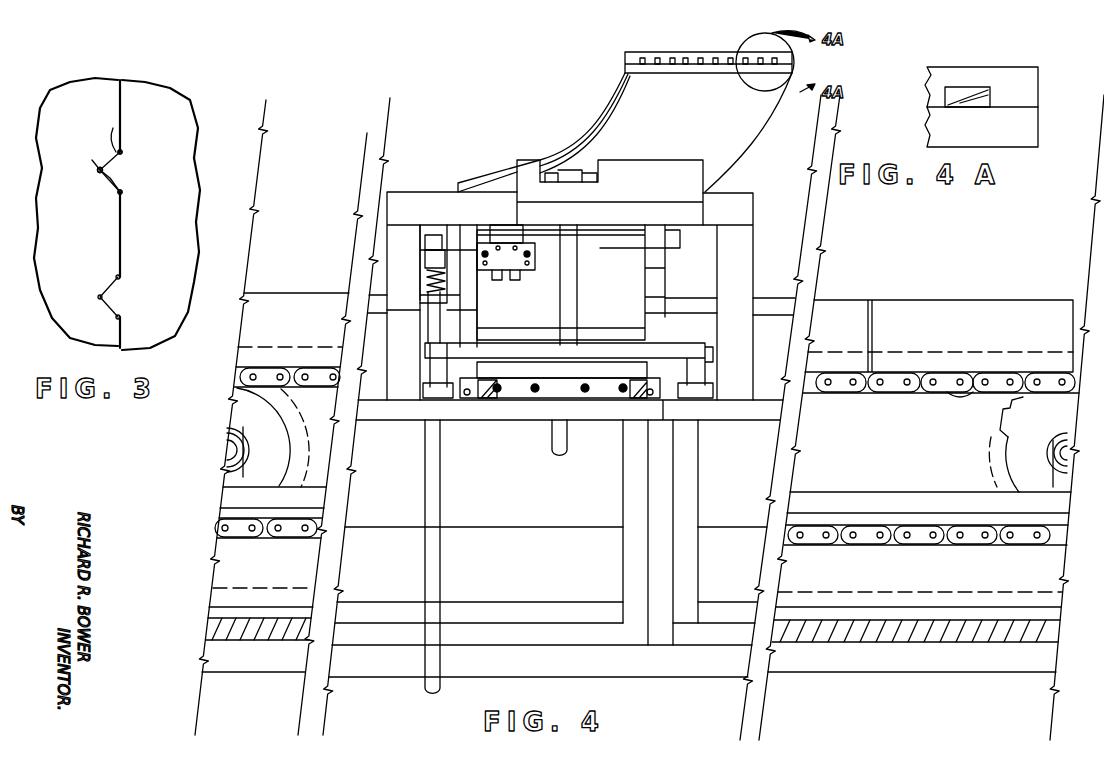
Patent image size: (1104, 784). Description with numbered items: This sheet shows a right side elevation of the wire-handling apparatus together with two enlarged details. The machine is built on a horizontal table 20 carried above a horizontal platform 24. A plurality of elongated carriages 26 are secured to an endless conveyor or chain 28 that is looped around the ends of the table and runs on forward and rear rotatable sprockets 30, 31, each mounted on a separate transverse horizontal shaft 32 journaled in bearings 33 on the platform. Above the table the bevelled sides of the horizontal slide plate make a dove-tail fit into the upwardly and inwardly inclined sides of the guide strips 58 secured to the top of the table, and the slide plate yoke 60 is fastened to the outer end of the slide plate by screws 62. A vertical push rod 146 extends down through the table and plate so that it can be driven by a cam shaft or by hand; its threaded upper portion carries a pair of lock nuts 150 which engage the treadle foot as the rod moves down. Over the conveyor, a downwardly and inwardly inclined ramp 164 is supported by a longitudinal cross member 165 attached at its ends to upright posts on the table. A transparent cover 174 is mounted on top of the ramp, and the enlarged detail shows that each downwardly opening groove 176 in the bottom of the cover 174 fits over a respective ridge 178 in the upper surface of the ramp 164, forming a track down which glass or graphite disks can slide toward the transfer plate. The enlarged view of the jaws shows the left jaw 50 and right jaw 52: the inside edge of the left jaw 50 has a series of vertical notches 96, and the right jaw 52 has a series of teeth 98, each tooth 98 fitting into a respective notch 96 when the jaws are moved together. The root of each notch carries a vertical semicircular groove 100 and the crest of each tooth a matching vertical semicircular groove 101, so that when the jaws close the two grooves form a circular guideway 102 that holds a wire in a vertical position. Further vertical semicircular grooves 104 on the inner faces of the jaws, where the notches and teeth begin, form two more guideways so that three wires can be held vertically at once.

In FIG. 4, the horizontal table 20 is at (492, 412).
In FIG. 4, the horizontal platform 24 is at (475, 655).
In FIG. 4, the elongated carriages 26 is at (898, 306).
In FIG. 4, the endless conveyor or chain 28 is at (868, 395).
In FIG. 4, the forward sprocket 30 is at (1005, 420).
In FIG. 4, the rear sprocket 31 is at (276, 437).
In FIG. 4, the transverse horizontal shaft 32 is at (226, 451).
In FIG. 4, the bearings 33 is at (226, 470).
In FIG. 3, the left jaw 50 is at (82, 82).
In FIG. 3, the right jaw 52 is at (152, 82).
In FIG. 4, the left horizontal guide strips 58 is at (455, 378).
In FIG. 4, the left slide plate yoke 60 is at (560, 388).
In FIG. 4, the screws 62 is at (497, 384).
In FIG. 3, the vertical notches 96 is at (113, 152).
In FIG. 3, the teeth 98 is at (112, 165).
In FIG. 3, the vertical semicircular groove 100 is at (97, 170).
In FIG. 3, the vertical semicircular groove 101 is at (112, 180).
In FIG. 3, the circular guideway 102 is at (98, 168).
In FIG. 3, the vertical semicircular grooves 104 is at (121, 140).
In FIG. 4, the vertical push rod 146 is at (432, 265).
In FIG. 4, the lock nuts 150 is at (428, 285).
In FIG. 4, the ramp 164 is at (775, 121).
In FIG. 4A, the ramp 164 is at (940, 128).
In FIG. 4, the longitudinal cross member 165 is at (665, 187).
In FIG. 4, the transparent cover 174 is at (640, 52).
In FIG. 4A, the transparent cover 174 is at (1000, 68).
In FIG. 4, the grooves 176 is at (688, 58).
In FIG. 4A, the grooves 176 is at (957, 87).
In FIG. 4A, the ridge 178 is at (990, 97).